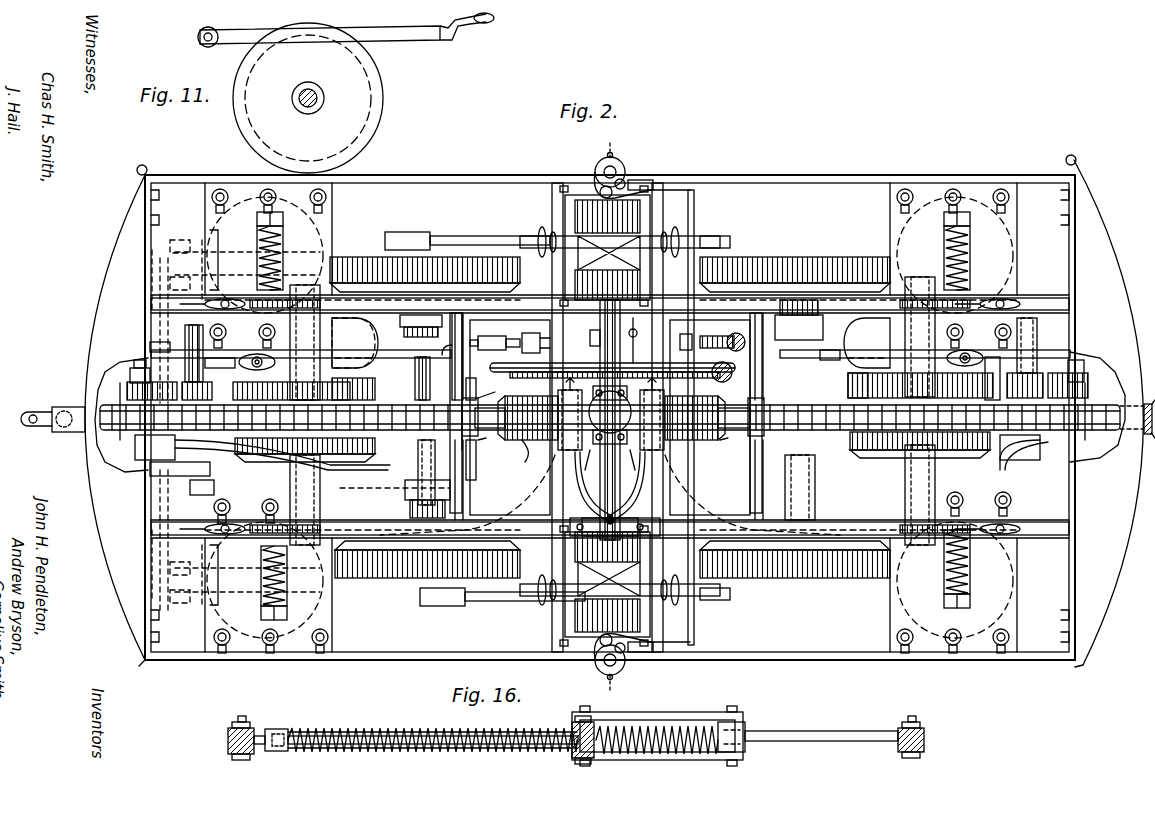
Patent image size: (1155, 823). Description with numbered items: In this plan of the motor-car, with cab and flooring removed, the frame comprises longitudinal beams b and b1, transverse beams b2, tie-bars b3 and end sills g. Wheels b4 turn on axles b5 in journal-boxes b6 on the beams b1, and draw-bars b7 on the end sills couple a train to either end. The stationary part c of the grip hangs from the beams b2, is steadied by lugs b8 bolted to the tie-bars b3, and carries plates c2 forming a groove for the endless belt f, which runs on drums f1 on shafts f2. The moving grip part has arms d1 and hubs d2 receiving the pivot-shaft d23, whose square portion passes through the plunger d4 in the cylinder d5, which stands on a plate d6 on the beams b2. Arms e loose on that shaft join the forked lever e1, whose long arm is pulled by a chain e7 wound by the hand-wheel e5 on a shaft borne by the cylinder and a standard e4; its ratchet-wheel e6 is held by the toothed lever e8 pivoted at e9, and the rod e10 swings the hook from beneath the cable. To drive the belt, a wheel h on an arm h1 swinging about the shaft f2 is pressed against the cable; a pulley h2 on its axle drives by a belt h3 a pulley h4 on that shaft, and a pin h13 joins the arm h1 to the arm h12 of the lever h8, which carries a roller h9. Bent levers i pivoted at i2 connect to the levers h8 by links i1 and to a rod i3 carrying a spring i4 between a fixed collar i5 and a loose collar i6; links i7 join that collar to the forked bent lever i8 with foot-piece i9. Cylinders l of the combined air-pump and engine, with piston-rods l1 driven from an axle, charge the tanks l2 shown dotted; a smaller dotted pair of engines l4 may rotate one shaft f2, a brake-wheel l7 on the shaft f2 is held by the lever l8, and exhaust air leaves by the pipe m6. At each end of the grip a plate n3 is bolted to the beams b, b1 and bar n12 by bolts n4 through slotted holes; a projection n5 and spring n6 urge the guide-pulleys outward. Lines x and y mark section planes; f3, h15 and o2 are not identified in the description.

In FIG. 2, the longitudinal beam b is at (818, 175).
In FIG. 2, the longitudinal beam b1 is at (395, 668).
In FIG. 2, the transverse beam b2 is at (548, 478).
In FIG. 2, the tie-bar b3 is at (606, 413).
In FIG. 2, the wheel b4 is at (362, 246).
In FIG. 2, the axle b5 is at (815, 478).
In FIG. 2, the journal-box b6 is at (610, 409).
In FIG. 2, the draw-bar b7 is at (66, 410).
In FIG. 2, the lug b8 is at (609, 445).
In FIG. 2, the stationary part of the grip c is at (613, 417).
In FIG. 2, the plate c2 is at (477, 454).
In FIG. 2, the arm d1 is at (510, 408).
In FIG. 2, the hub d2 is at (611, 418).
In FIG. 2, the plunger d4 is at (610, 420).
In FIG. 2, the cylinder d5 is at (594, 460).
In FIG. 2, the plate d6 is at (592, 329).
In FIG. 2, the pivot-shaft d23 is at (523, 451).
In FIG. 2, the arm e is at (611, 414).
In FIG. 2, the forked lever e1 is at (588, 478).
In FIG. 2, the standard e4 is at (615, 516).
In FIG. 2, the hand-wheel e5 is at (638, 366).
In FIG. 2, the ratchet-wheel e6 is at (592, 360).
In FIG. 2, the chain e7 is at (618, 520).
In FIG. 2, the lever e8 is at (626, 460).
In FIG. 2, the pivot e9 is at (730, 367).
In FIG. 2, the rod e10 is at (624, 338).
In FIG. 2, the endless belt f is at (605, 420).
In FIG. 2, the drum f1 is at (696, 378).
In FIG. 11, the shaft f2 is at (320, 104).
In FIG. 2, the shaft f2 is at (915, 277).
In FIG. 2, the link f3 is at (600, 384).
In FIG. 2, the end sill g is at (614, 411).
In FIG. 2, the wheel h is at (1114, 386).
In FIG. 2, the arm h1 is at (180, 365).
In FIG. 2, the pulley h2 is at (135, 370).
In FIG. 2, the belt h3 is at (610, 399).
In FIG. 2, the pulley h4 is at (622, 382).
In FIG. 2, the lever h8 is at (610, 336).
In FIG. 2, the roller h9 is at (206, 391).
In FIG. 2, the arm h12 is at (222, 362).
In FIG. 2, the pin h13 is at (262, 360).
In FIG. 2, the cam lever h15 is at (611, 343).
In FIG. 2, the bent lever i is at (488, 340).
In FIG. 16, the bent lever i is at (228, 738).
In FIG. 2, the link i1 is at (452, 356).
In FIG. 2, the pivot i2 is at (226, 489).
In FIG. 2, the rod i3 is at (514, 338).
In FIG. 16, the rod i3 is at (336, 746).
In FIG. 2, the spring i4 is at (707, 331).
In FIG. 16, the spring i4 is at (406, 728).
In FIG. 16, the fixed collar i5 is at (278, 728).
In FIG. 16, the loose collar i6 is at (752, 728).
In FIG. 16, the link i7 is at (653, 722).
In FIG. 16, the bent lever i8 is at (570, 724).
In FIG. 2, the foot-piece i9 is at (734, 331).
In FIG. 2, the cylinder l is at (620, 416).
In FIG. 2, the piston-rod l1 is at (557, 417).
In FIG. 2, the tank l2 is at (610, 495).
In FIG. 2, the combined air-pump and engine l4 is at (236, 420).
In FIG. 11, the brake-wheel l7 is at (308, 98).
In FIG. 2, the brake-wheel l7 is at (612, 448).
In FIG. 11, the lever l8 is at (346, 41).
In FIG. 2, the pipe m6 is at (624, 156).
In FIG. 2, the plate n3 is at (610, 417).
In FIG. 2, the bolt n4 is at (220, 188).
In FIG. 2, the projection n5 is at (628, 414).
In FIG. 2, the spring n6 is at (626, 416).
In FIG. 2, the bar n12 is at (150, 350).
In FIG. 2, the block o2 is at (536, 332).
In FIG. 2, the section line x is at (606, 417).
In FIG. 2, the section line y is at (474, 431).